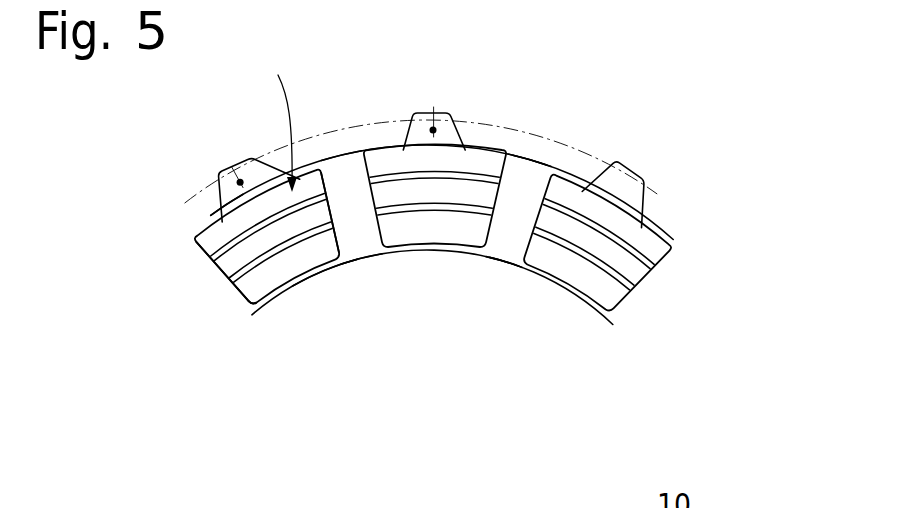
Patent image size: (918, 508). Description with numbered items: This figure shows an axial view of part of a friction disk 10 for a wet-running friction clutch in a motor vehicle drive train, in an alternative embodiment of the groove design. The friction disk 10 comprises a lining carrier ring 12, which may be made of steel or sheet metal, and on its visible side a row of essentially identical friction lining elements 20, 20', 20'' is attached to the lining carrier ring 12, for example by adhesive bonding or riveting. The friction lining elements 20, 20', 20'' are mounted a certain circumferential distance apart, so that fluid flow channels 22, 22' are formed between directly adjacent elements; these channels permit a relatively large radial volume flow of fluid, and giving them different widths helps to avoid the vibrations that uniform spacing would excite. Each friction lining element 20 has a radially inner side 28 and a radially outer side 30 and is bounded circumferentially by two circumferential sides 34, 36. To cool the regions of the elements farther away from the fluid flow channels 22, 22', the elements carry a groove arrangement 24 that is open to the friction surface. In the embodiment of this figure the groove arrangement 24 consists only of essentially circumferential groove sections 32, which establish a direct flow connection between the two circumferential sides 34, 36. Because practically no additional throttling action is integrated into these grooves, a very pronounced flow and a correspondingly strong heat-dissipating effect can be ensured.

The friction disk 10 is at (707, 146).
The lining carrier ring 12 is at (517, 167).
The friction lining element 20 is at (275, 189).
The friction lining element 20' is at (443, 234).
The friction lining element 20'' is at (653, 250).
The fluid flow channel 22 is at (412, 144).
The fluid flow channel 22' is at (564, 155).
The groove arrangement 24 is at (276, 115).
The radially inner side 28 is at (297, 287).
The radially outer side 30 is at (204, 219).
The circumferential groove section 32 is at (222, 250).
The circumferential side 34 is at (246, 300).
The circumferential side 36 is at (340, 232).